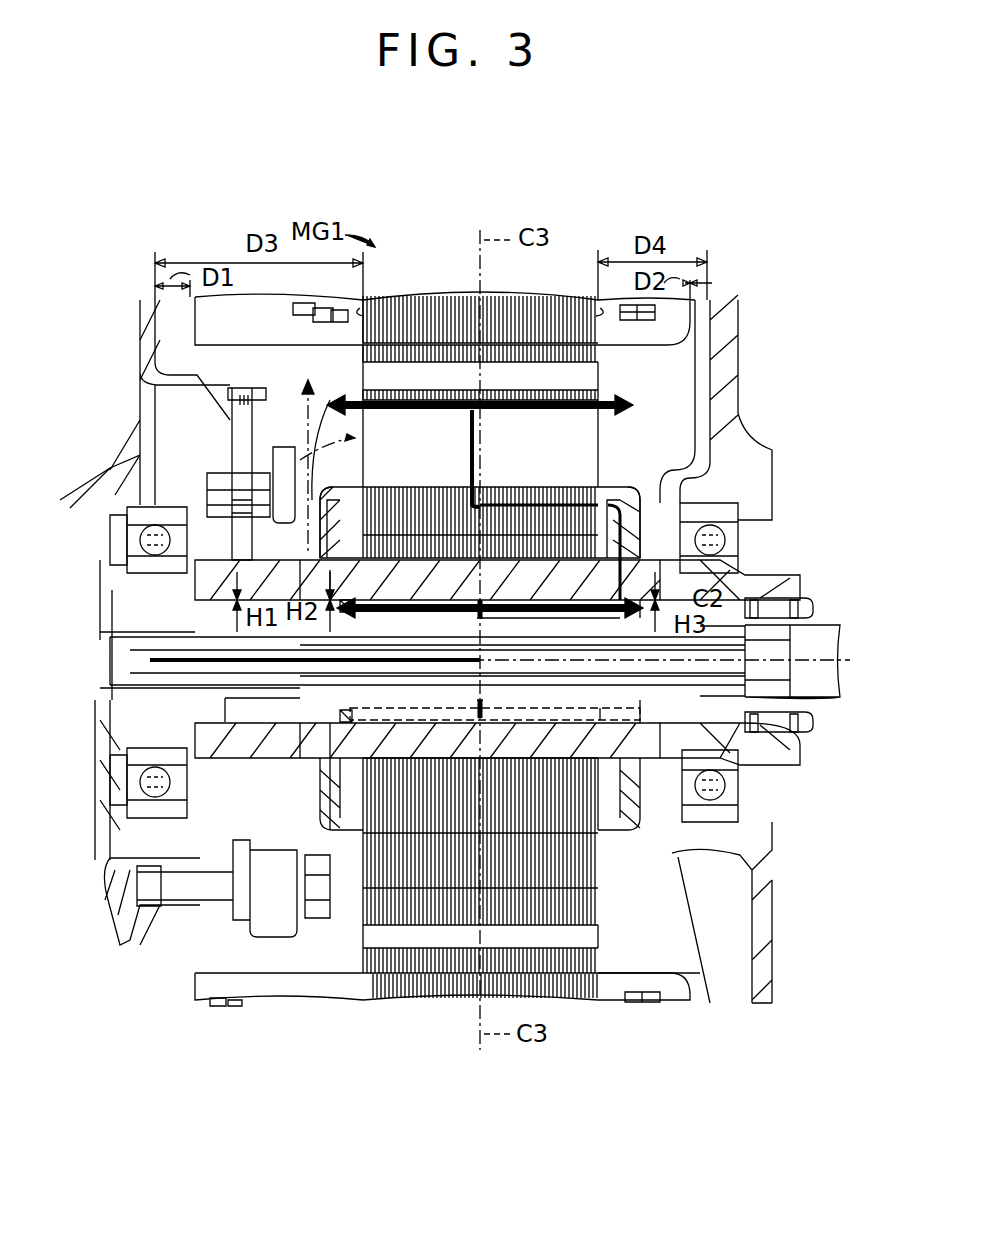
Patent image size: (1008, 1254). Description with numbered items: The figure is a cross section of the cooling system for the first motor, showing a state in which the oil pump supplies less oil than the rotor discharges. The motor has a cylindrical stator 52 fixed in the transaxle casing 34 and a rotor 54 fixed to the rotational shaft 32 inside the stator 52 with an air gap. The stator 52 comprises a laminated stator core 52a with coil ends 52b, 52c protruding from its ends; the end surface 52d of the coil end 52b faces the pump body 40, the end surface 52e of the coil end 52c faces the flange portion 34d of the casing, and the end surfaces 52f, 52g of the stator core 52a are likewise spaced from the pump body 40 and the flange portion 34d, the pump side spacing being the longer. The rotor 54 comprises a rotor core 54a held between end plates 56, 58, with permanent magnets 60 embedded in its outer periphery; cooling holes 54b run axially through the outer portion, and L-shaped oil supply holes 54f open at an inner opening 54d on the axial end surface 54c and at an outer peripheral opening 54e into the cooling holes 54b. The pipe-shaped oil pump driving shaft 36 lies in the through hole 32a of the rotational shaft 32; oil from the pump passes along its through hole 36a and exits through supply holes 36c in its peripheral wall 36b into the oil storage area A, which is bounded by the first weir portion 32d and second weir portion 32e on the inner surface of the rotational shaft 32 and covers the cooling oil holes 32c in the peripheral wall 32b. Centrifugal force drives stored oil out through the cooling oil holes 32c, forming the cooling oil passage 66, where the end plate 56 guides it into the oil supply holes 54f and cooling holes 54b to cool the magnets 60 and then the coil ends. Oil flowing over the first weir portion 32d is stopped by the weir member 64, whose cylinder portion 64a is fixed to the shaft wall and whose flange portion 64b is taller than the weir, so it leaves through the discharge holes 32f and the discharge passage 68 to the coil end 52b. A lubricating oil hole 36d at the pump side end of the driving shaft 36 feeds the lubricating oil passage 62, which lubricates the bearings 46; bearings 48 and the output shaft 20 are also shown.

The output shaft 20 is at (838, 634).
The rotational shaft 32 is at (794, 578).
The through hole 32a is at (610, 800).
The peripheral wall 32b is at (578, 618).
The cooling oil holes 32c is at (600, 572).
The first weir portion 32d is at (363, 618).
The second weir portion 32e is at (646, 616).
The discharge holes 32f is at (318, 586).
The transaxle casing 34 is at (760, 344).
The flange portion 34d is at (732, 390).
The oil pump driving shaft 36 is at (640, 712).
The through hole 36a is at (322, 670).
The peripheral wall 36b is at (574, 710).
The supply holes 36c is at (478, 630).
The lubricating oil hole 36d is at (150, 652).
The pump body 40 is at (142, 366).
The bearings 46 is at (150, 537).
The bearing 48 is at (723, 543).
The stator 52 is at (472, 288).
The stator core 52a is at (505, 300).
The coil end 52b is at (295, 306).
The coil end 52c is at (618, 306).
The end surface 52d is at (195, 333).
The end surface 52e is at (738, 308).
The end surface 52f is at (370, 300).
The end surface 52g is at (590, 302).
The rotor 54 is at (303, 372).
The rotor core 54a is at (338, 416).
The cooling holes 54b is at (380, 470).
The axial end surface 54c is at (606, 470).
The inner opening 54d is at (608, 532).
The outer peripheral opening 54e is at (468, 484).
The oil supply holes 54f is at (528, 512).
The end plate 56 is at (624, 488).
The end plate 58 is at (333, 600).
The permanent magnets 60 is at (362, 358).
The lubricating oil passage 62 is at (98, 598).
The weir member 64 is at (237, 718).
The cylinder portion 64a is at (225, 485).
The flange portion 64b is at (110, 714).
The cooling oil passage 66 is at (478, 431).
The discharge passage 68 is at (348, 439).
The oil storage area A is at (610, 716).